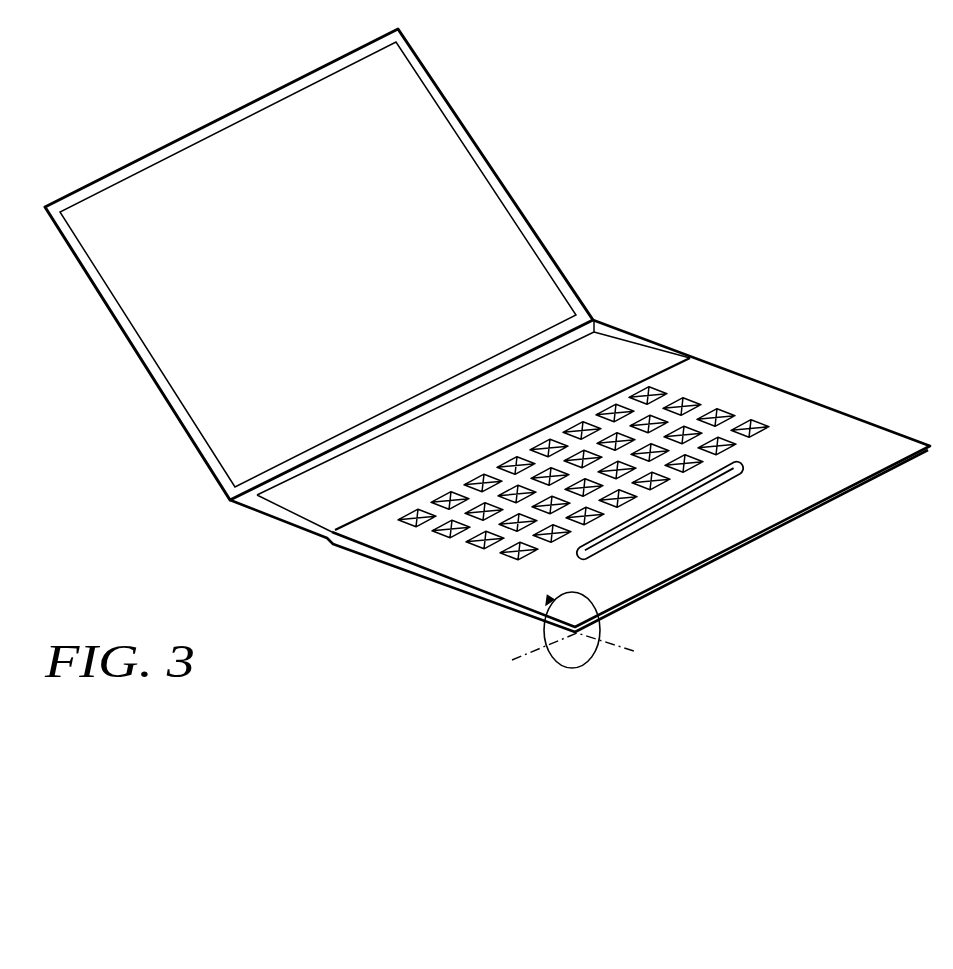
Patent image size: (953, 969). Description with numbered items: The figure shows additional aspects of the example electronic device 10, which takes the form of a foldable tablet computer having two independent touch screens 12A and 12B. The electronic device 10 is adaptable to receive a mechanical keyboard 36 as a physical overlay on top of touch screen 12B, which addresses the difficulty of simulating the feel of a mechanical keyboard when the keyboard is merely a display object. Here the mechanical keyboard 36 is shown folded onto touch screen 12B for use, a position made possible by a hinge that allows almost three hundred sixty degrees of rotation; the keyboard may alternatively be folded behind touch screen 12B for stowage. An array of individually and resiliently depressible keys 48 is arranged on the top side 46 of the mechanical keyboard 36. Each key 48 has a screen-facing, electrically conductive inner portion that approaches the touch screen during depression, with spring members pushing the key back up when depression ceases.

The electronic device 10 is at (137, 451).
The touch screen 12A is at (405, 103).
The touch screen 12B is at (580, 476).
The mechanical keyboard 36 is at (381, 581).
The top side 46 is at (849, 453).
The keys 48 is at (688, 405).